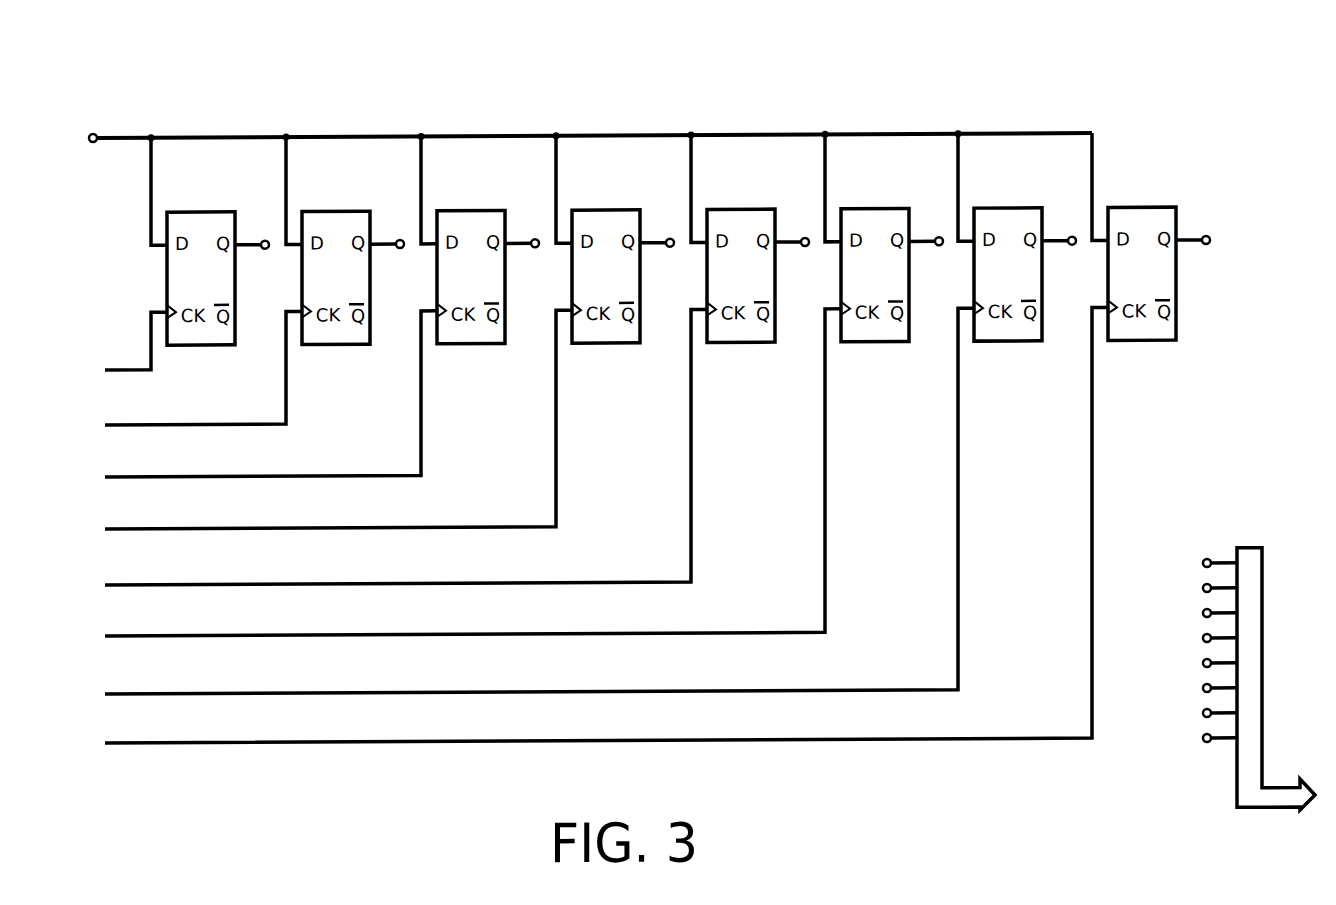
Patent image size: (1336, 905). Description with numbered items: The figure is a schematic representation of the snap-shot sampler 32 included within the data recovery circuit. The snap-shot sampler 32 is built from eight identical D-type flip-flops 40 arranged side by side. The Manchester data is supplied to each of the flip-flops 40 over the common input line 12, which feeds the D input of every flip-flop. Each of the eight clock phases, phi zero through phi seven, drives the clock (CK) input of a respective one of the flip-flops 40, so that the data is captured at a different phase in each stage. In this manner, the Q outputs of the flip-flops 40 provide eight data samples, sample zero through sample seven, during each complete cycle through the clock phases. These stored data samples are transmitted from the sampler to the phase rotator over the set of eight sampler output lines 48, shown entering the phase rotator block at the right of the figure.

The input line 12 is at (93, 134).
The snap-shot sampler 32 is at (574, 56).
The D-type flip-flops 40 is at (213, 212).
The sampler output lines 48 is at (1249, 554).